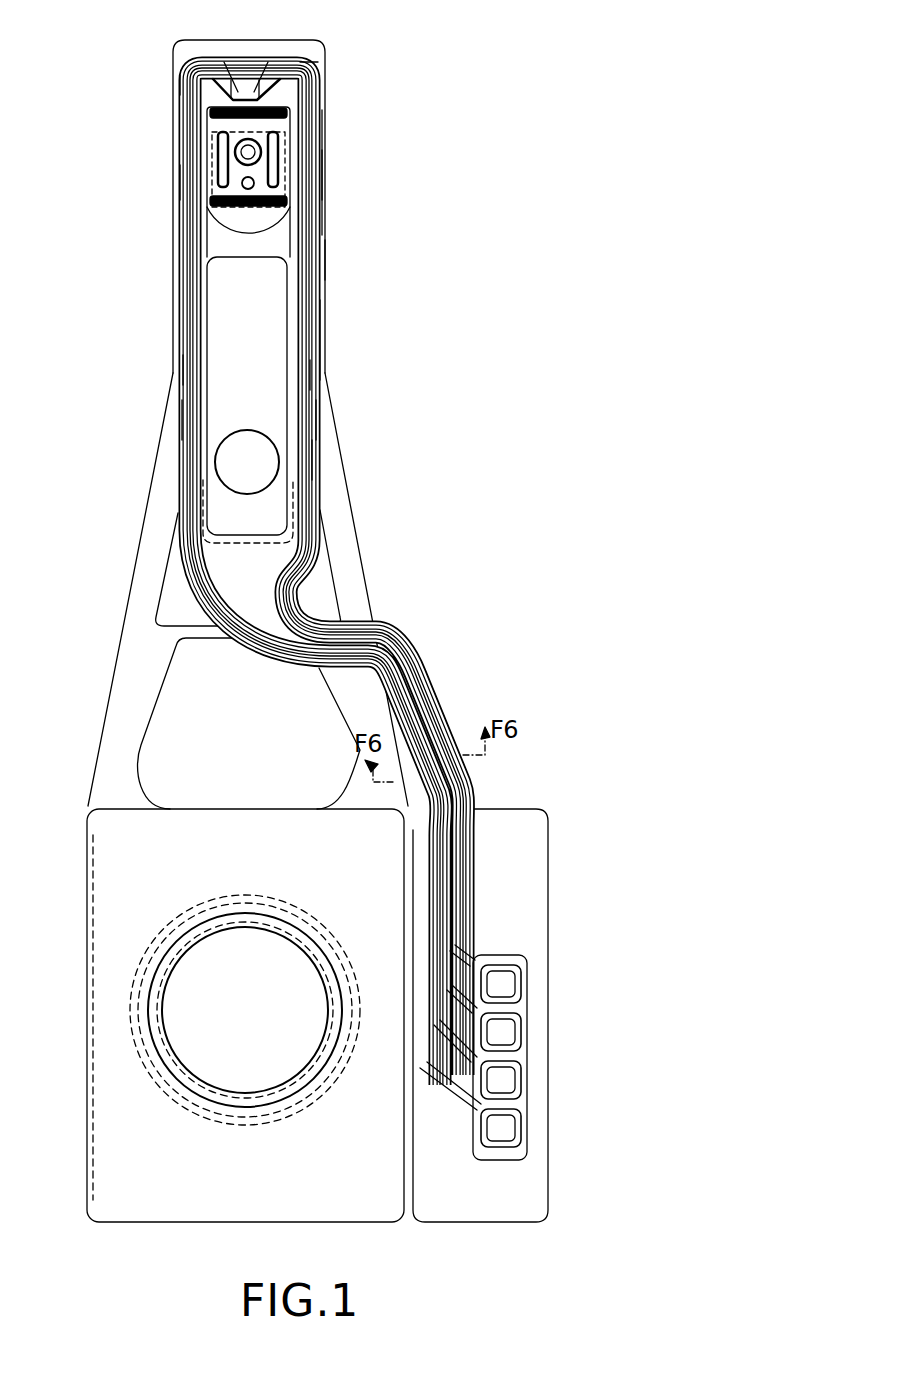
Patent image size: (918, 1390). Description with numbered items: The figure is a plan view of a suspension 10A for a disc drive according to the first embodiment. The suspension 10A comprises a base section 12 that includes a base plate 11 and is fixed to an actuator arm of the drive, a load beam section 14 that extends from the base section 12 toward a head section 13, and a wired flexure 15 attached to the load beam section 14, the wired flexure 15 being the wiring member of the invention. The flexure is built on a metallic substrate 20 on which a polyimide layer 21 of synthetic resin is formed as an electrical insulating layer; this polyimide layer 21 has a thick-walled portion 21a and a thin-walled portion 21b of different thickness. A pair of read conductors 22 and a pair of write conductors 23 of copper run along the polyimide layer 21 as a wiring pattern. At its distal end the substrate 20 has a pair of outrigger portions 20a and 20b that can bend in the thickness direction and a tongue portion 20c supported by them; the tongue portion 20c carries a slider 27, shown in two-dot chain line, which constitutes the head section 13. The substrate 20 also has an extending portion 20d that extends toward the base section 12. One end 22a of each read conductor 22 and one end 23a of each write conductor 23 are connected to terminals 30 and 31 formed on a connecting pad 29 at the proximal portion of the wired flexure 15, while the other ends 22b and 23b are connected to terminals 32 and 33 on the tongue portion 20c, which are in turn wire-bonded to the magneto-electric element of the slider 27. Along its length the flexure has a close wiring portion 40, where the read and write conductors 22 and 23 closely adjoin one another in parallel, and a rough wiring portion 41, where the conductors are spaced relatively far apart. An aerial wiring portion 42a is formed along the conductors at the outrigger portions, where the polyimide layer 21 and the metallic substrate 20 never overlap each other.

The suspension 10A is at (528, 413).
The base plate 11 is at (93, 1095).
The base section 12 is at (87, 1010).
The head section 13 is at (190, 137).
The load beam section 14 is at (152, 637).
The wired flexure 15 is at (326, 257).
The metallic substrate 20 is at (228, 313).
The outrigger portion 20a is at (180, 178).
The outrigger portion 20b is at (328, 194).
The tongue portion 20c is at (243, 218).
The extending portion 20d is at (522, 792).
The polyimide layer 21 is at (313, 463).
The thick-walled portion 21a is at (182, 190).
The thin-walled portion 21b is at (180, 420).
The read conductors 22 is at (183, 377).
The one end of read conductor 22a is at (462, 1097).
The other end of read conductor 22b is at (188, 66).
The write conductors 23 is at (310, 385).
The one end of write conductor 23a is at (487, 960).
The other end of write conductor 23b is at (287, 60).
The slider 27 is at (200, 152).
The connecting pad 29 is at (522, 1057).
The terminals 30 is at (507, 1123).
The terminals 31 is at (510, 1028).
The terminals 32 is at (237, 92).
The terminals 33 is at (257, 92).
The close wiring portion 40 is at (443, 712).
The rough wiring portion 41 is at (327, 342).
The aerial wiring portion 42a is at (183, 115).